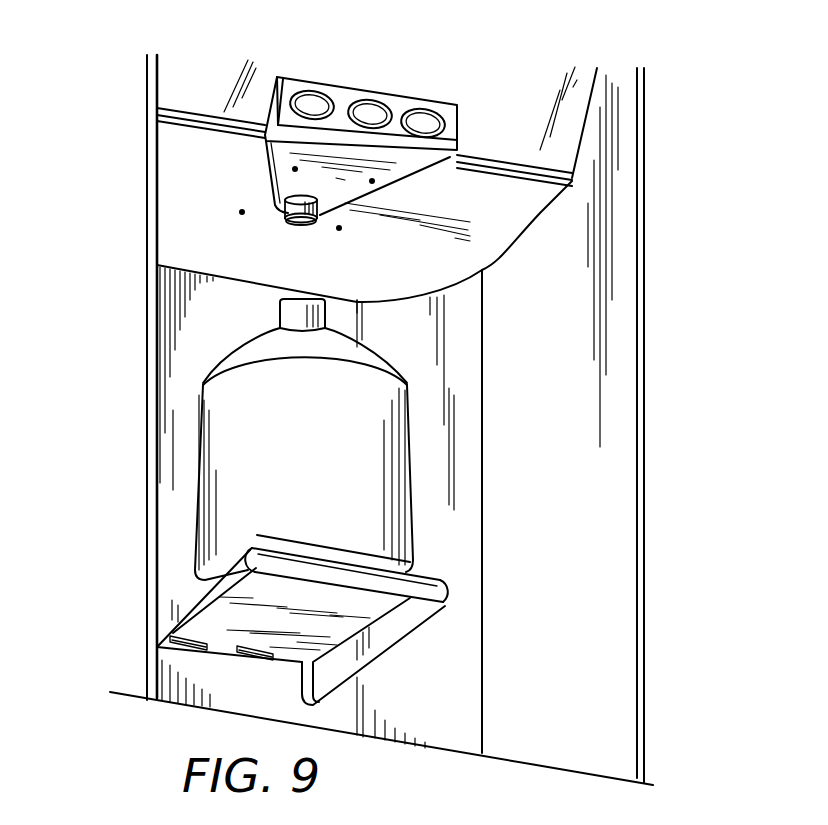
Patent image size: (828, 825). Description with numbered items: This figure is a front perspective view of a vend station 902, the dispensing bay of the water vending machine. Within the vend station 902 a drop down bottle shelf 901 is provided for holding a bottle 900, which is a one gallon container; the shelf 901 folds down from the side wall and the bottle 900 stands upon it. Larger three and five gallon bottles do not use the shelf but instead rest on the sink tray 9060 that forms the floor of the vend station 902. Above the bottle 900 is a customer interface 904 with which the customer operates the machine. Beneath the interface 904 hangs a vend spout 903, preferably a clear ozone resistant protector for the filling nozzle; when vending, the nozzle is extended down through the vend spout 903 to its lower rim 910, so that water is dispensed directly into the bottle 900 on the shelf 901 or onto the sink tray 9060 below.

The bottle 900 is at (337, 465).
The drop down bottle shelf 901 is at (210, 611).
The vend station 902 is at (507, 433).
The vend spout 903 is at (285, 217).
The customer interface 904 is at (460, 104).
The lower rim 910 is at (318, 224).
The sink tray 9060 is at (430, 746).